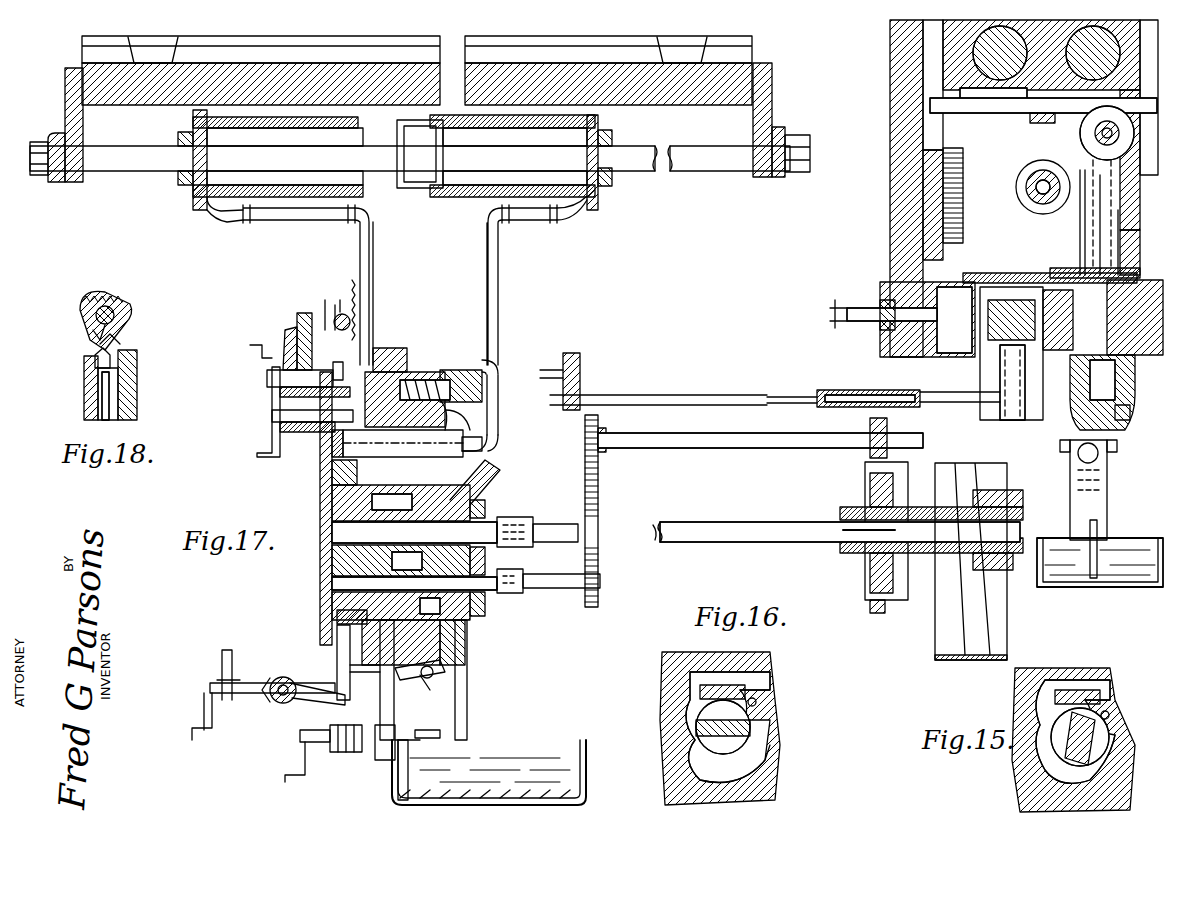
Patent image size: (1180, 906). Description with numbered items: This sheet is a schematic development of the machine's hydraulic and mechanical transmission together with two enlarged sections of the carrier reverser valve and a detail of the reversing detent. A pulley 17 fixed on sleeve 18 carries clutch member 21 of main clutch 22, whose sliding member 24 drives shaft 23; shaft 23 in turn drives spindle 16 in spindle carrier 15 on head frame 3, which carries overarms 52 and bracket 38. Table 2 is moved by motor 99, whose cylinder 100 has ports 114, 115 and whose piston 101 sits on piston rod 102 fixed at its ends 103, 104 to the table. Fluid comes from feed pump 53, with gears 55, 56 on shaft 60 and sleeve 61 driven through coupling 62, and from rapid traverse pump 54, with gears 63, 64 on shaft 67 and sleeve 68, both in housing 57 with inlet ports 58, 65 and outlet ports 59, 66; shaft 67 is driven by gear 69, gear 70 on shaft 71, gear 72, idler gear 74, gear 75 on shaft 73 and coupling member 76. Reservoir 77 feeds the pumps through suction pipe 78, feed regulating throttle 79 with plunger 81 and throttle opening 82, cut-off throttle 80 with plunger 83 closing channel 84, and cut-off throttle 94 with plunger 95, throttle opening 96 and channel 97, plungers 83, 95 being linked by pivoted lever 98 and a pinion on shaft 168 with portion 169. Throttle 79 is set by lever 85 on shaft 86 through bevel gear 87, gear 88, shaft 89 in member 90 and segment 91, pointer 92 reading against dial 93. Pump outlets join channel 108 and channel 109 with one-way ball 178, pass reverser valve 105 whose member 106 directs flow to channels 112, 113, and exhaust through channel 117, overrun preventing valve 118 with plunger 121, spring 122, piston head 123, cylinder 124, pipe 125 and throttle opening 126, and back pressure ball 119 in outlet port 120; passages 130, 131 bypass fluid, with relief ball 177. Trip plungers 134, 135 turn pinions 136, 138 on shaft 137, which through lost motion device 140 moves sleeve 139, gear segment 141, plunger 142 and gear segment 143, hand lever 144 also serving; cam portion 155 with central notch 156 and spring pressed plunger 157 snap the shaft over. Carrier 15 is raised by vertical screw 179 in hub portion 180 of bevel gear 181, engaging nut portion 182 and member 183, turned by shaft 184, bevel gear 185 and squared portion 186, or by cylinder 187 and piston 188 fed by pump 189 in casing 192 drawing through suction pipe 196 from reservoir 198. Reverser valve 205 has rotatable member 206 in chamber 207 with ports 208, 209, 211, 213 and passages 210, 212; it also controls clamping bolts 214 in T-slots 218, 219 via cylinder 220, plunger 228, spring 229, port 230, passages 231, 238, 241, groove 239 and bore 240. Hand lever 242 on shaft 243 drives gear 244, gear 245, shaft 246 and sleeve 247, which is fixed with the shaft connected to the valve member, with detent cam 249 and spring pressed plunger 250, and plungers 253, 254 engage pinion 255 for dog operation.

In FIG. 17, the table 2 is at (752, 46).
In FIG. 16, the head frame 3 is at (890, 200).
In FIG. 16, the spindle carrier 15 is at (1022, 20).
In FIG. 16, the spindle 16 is at (1022, 175).
In FIG. 16, the pulley 17 is at (1007, 477).
In FIG. 16, the sleeve 18 is at (955, 515).
In FIG. 16, the clutch member 21 is at (900, 578).
In FIG. 16, the main clutch 22 is at (895, 500).
In FIG. 16, the shaft 23 is at (785, 542).
In FIG. 16, the clutch member 24 is at (870, 580).
In FIG. 16, the bracket 38 is at (1122, 412).
In FIG. 16, the overarms 52 is at (975, 65).
In FIG. 17, the feed pump 53 is at (330, 570).
In FIG. 17, the rapid traverse pump 54 is at (478, 560).
In FIG. 17, the gear 55 is at (345, 518).
In FIG. 17, the gear 56 is at (335, 607).
In FIG. 17, the housing 57 is at (462, 635).
In FIG. 17, the inlet port 58 is at (330, 595).
In FIG. 17, the outlet port 59 is at (345, 505).
In FIG. 17, the shaft 60 is at (492, 522).
In FIG. 17, the sleeve 61 is at (345, 600).
In FIG. 17, the coupling 62 is at (528, 525).
In FIG. 17, the gear 63 is at (447, 628).
In FIG. 17, the gear 64 is at (462, 500).
In FIG. 17, the inlet port 65 is at (445, 650).
In FIG. 17, the outlet port 66 is at (460, 488).
In FIG. 17, the shaft 67 is at (490, 595).
In FIG. 17, the sleeve 68 is at (428, 520).
In FIG. 16, the gear 69 is at (878, 613).
In FIG. 16, the gear 70 is at (870, 425).
In FIG. 16, the shaft 71 is at (740, 448).
In FIG. 16, the gear 72 is at (598, 425).
In FIG. 16, the shaft 73 is at (562, 590).
In FIG. 16, the idler gear 74 is at (598, 490).
In FIG. 16, the gear 75 is at (595, 606).
In FIG. 17, the coupling member 76 is at (520, 594).
In FIG. 17, the reservoir 77 is at (535, 752).
In FIG. 17, the suction pipe 78 is at (410, 755).
In FIG. 17, the feed regulating throttle 79 is at (335, 653).
In FIG. 17, the cut-off throttle 80 is at (348, 745).
In FIG. 17, the plunger 81 is at (338, 675).
In FIG. 17, the throttle opening 82 is at (330, 630).
In FIG. 17, the plunger 83 is at (390, 700).
In FIG. 17, the channel 84 is at (385, 600).
In FIG. 17, the lever 85 is at (205, 716).
In FIG. 17, the shaft 86 is at (262, 693).
In FIG. 17, the bevel gear 87 is at (275, 680).
In FIG. 17, the gear 88 is at (290, 678).
In FIG. 17, the shaft 89 is at (283, 705).
In FIG. 17, the member 90 is at (325, 545).
In FIG. 17, the segment 91 is at (325, 702).
In FIG. 17, the pointer 92 is at (224, 665).
In FIG. 17, the dial 93 is at (236, 651).
In FIG. 17, the cut-off throttle 94 is at (450, 668).
In FIG. 17, the plunger 95 is at (467, 700).
In FIG. 17, the throttle opening 96 is at (415, 600).
In FIG. 17, the channel 97 is at (450, 655).
In FIG. 17, the pivoted lever 98 is at (405, 700).
In FIG. 17, the motor 99 is at (320, 190).
In FIG. 17, the cylinder 100 is at (282, 200).
In FIG. 17, the piston 101 is at (420, 188).
In FIG. 17, the piston rod 102 is at (158, 170).
In FIG. 17, the rod end 103 is at (88, 175).
In FIG. 17, the rod end 104 is at (757, 170).
In FIG. 17, the reverser valve 105 is at (448, 446).
In FIG. 17, the valve member 106 is at (335, 450).
In FIG. 17, the channel 108 is at (375, 520).
In FIG. 17, the channel 109 is at (400, 505).
In FIG. 17, the channel 112 is at (373, 250).
In FIG. 17, the channel 113 is at (498, 265).
In FIG. 17, the port 114 is at (212, 192).
In FIG. 17, the port 115 is at (583, 188).
In FIG. 17, the channel 117 is at (385, 385).
In FIG. 17, the overrun preventing valve 118 is at (485, 370).
In FIG. 17, the spring pressed ball 119 is at (405, 372).
In FIG. 17, the outlet port 120 is at (378, 348).
In FIG. 17, the plunger 121 is at (405, 400).
In FIG. 17, the spring 122 is at (440, 385).
In FIG. 17, the piston head 123 is at (455, 372).
In FIG. 17, the cylinder 124 is at (470, 412).
In FIG. 17, the pipe 125 is at (468, 428).
In FIG. 17, the throttle opening 126 is at (420, 400).
In FIG. 17, the passage 130 is at (332, 540).
In FIG. 17, the passage 131 is at (440, 440).
In FIG. 17, the trip plunger 134 is at (355, 287).
In FIG. 17, the trip plunger 135 is at (335, 305).
In FIG. 17, the pinion 136 is at (365, 385).
In FIG. 17, the shaft 137 is at (305, 424).
In FIG. 18, the shaft 137 is at (118, 297).
In FIG. 17, the pinion 138 is at (342, 314).
In FIG. 17, the sleeve 139 is at (292, 423).
In FIG. 17, the lost motion device 140 is at (268, 409).
In FIG. 17, the gear segment 141 is at (335, 445).
In FIG. 17, the plunger 142 is at (330, 388).
In FIG. 17, the gear segment 143 is at (337, 462).
In FIG. 17, the hand lever 144 is at (270, 455).
In FIG. 18, the cam portion 155 is at (130, 340).
In FIG. 18, the central notch 156 is at (90, 338).
In FIG. 18, the spring pressed plunger 157 is at (90, 366).
In FIG. 17, the shaft 168 is at (440, 735).
In FIG. 17, the portion 169 is at (385, 760).
In FIG. 17, the spring pressed ball 177 is at (330, 480).
In FIG. 17, the spring pressed ball 178 is at (330, 492).
In FIG. 16, the vertical screw 179 is at (965, 212).
In FIG. 16, the hub portion 180 is at (945, 357).
In FIG. 16, the bevel gear 181 is at (920, 355).
In FIG. 16, the nut portion 182 is at (963, 270).
In FIG. 16, the member 183 is at (985, 290).
In FIG. 16, the shaft 184 is at (895, 310).
In FIG. 16, the bevel gear 185 is at (896, 290).
In FIG. 16, the squared portion 186 is at (840, 310).
In FIG. 16, the cylinder 187 is at (1000, 345).
In FIG. 16, the piston 188 is at (1012, 358).
In FIG. 16, the pump 189 is at (1068, 460).
In FIG. 16, the casing 192 is at (1107, 500).
In FIG. 16, the suction pipe 196 is at (1100, 540).
In FIG. 16, the reservoir 198 is at (1113, 582).
In FIG. 16, the reverser valve 205 is at (1115, 395).
In FIG. 15, the reverser valve 205 is at (1008, 697).
In FIG. 16, the rotatable member 206 is at (1075, 405).
In FIG. 15, the rotatable member 206 is at (1100, 697).
In FIG. 16, the chamber 207 is at (765, 695).
In FIG. 15, the chamber 207 is at (1115, 735).
In FIG. 16, the port 208 is at (690, 745).
In FIG. 15, the port 208 is at (1045, 765).
In FIG. 16, the port 209 is at (1080, 378).
In FIG. 15, the port 209 is at (1045, 700).
In FIG. 16, the passage 210 is at (1045, 400).
In FIG. 16, the port 211 is at (1122, 420).
In FIG. 15, the port 211 is at (1115, 760).
In FIG. 16, the passage 212 is at (1025, 318).
In FIG. 16, the port 213 is at (757, 704).
In FIG. 15, the port 213 is at (1108, 715).
In FIG. 16, the bolts 214 is at (1020, 125).
In FIG. 16, the T-slot 218 is at (923, 140).
In FIG. 16, the T-slot 219 is at (1135, 40).
In FIG. 16, the cylinder 220 is at (1125, 135).
In FIG. 16, the plunger 228 is at (1055, 295).
In FIG. 16, the spring 229 is at (1090, 260).
In FIG. 16, the port 230 is at (1088, 262).
In FIG. 16, the passage 231 is at (1085, 320).
In FIG. 16, the passage 238 is at (1095, 370).
In FIG. 16, the groove 239 is at (1082, 250).
In FIG. 16, the bore 240 is at (1030, 285).
In FIG. 16, the passage 241 is at (1120, 345).
In FIG. 17, the hand lever 242 is at (255, 345).
In FIG. 17, the shaft 243 is at (288, 350).
In FIG. 16, the gear 244 is at (580, 360).
In FIG. 16, the gear 245 is at (573, 410).
In FIG. 16, the shaft 246 is at (722, 390).
In FIG. 16, the sleeve 247 is at (855, 390).
In FIG. 17, the cam 249 is at (300, 340).
In FIG. 17, the spring pressed plunger 250 is at (290, 340).
In FIG. 16, the spring pressed plunger 250 is at (1090, 250).
In FIG. 17, the plunger 253 is at (305, 340).
In FIG. 17, the plunger 254 is at (312, 367).
In FIG. 17, the pinion 255 is at (312, 330).